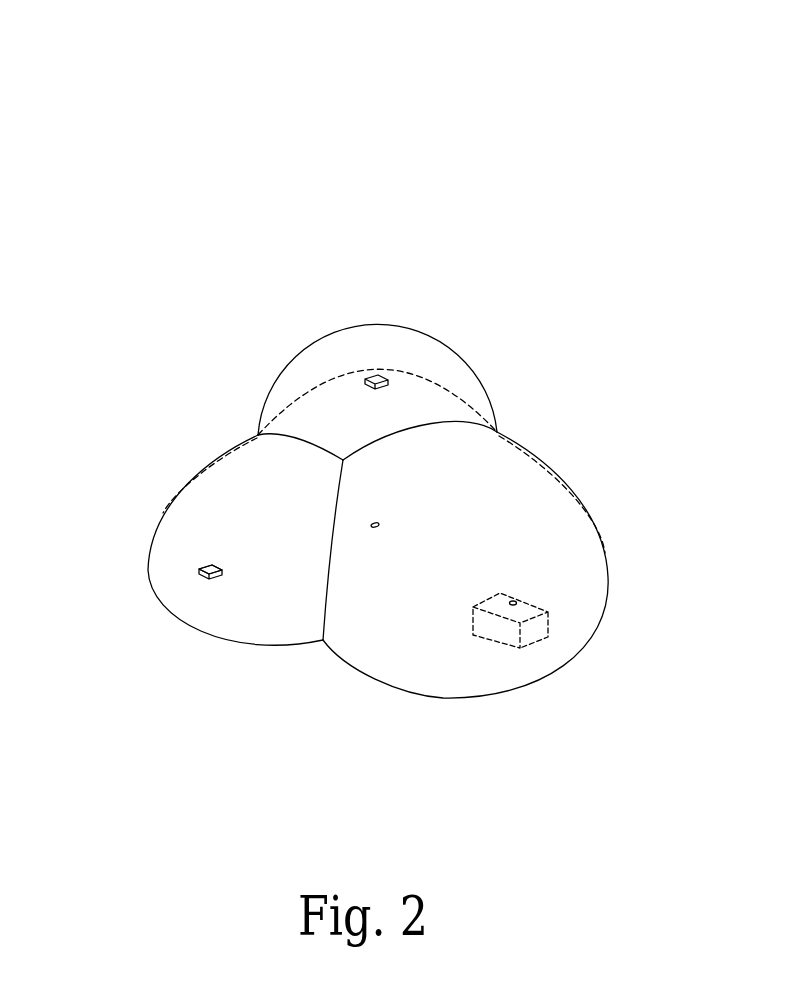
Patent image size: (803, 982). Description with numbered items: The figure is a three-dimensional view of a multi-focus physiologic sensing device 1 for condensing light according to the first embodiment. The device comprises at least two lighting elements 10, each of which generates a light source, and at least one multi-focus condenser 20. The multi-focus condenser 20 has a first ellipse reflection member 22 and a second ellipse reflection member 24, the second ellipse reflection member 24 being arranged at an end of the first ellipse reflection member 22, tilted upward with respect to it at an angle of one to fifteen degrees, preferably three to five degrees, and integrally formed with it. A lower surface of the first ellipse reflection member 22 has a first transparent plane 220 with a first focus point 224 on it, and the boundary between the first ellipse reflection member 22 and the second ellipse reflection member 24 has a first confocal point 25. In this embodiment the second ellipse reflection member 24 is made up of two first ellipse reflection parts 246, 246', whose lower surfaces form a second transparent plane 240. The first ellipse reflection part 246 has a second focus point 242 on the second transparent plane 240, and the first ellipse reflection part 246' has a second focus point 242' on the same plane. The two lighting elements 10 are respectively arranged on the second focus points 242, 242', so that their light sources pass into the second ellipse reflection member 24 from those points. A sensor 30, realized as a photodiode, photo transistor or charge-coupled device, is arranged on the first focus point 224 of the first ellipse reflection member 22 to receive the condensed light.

The multi-focus physiologic sensing device for condensing light 1 is at (202, 142).
The lighting element 10 is at (200, 573).
The multi-focus condenser 20 is at (550, 428).
The first ellipse reflection member 22 is at (610, 560).
The second ellipse reflection member 24 is at (257, 436).
The first confocal point 25 is at (381, 527).
The sensor 30 is at (535, 637).
The first transparent plane 220 is at (477, 697).
The first focus point 224 is at (518, 603).
The second transparent plane 240 is at (253, 647).
The second focus point 242 is at (148, 555).
The second focus point 242' is at (422, 342).
The first ellipse reflection part 246 is at (144, 475).
The first ellipse reflection part 246' is at (377, 345).